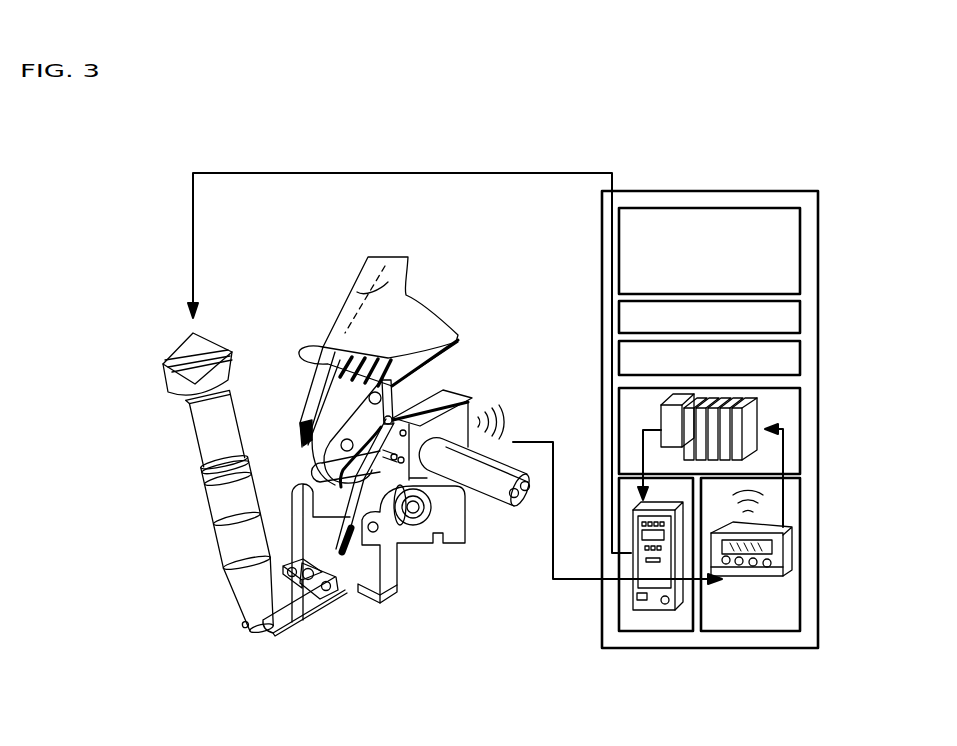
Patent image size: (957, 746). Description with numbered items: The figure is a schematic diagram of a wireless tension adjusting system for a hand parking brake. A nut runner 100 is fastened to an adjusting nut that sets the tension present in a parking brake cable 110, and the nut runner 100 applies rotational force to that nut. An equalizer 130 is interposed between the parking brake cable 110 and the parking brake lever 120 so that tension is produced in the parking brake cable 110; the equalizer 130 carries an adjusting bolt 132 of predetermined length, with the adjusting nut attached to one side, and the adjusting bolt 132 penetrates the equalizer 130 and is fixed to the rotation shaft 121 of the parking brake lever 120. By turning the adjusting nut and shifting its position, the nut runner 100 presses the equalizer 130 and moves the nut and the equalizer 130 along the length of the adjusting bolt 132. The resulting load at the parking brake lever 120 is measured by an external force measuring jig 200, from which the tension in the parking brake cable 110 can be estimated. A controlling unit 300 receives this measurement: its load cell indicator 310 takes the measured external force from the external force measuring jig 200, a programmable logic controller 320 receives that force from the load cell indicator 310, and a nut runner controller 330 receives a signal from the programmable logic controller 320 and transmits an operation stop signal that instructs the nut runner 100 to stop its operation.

The nut runner 100 is at (219, 510).
The parking brake cable 110 is at (273, 636).
The parking brake lever 120 is at (423, 312).
The rotation shaft 121 is at (423, 512).
The equalizer 130 is at (327, 603).
The adjusting bolt 132 is at (337, 567).
The external force measuring jig 200 is at (447, 393).
The controlling unit 300 is at (708, 191).
The load cell indicator 310 is at (792, 528).
The programmable logic controller (PLC) 320 is at (760, 408).
The nut runner controller 330 is at (652, 610).